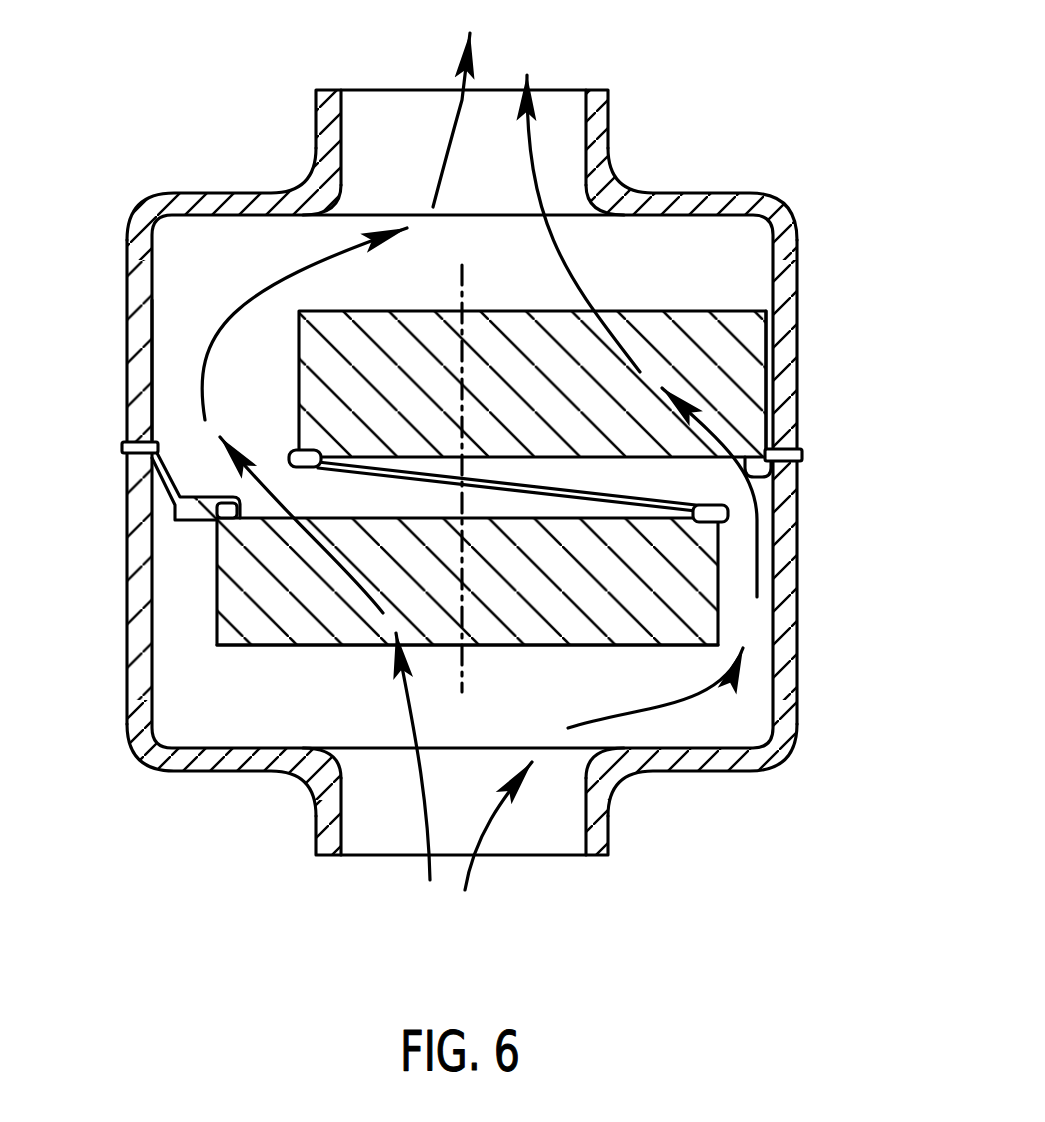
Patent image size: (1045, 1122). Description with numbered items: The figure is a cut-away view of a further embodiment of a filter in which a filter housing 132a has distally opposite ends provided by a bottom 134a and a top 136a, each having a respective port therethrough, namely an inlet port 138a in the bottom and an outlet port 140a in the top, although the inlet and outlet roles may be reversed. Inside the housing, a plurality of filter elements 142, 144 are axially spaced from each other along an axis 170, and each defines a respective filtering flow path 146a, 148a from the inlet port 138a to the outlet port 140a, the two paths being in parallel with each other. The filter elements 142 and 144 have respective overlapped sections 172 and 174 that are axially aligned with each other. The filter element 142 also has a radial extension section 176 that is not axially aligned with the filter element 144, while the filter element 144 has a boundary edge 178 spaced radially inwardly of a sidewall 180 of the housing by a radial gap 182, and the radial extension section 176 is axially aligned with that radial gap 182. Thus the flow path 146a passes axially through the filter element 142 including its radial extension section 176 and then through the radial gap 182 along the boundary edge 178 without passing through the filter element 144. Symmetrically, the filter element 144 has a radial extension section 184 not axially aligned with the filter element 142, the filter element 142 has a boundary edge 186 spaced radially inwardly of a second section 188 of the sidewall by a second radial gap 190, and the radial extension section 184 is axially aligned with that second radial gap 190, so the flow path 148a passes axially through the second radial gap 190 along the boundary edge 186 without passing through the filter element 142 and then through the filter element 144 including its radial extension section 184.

The filter housing 132a is at (482, 485).
The bottom 134a is at (722, 775).
The top 136a is at (713, 192).
The inlet port 138a is at (368, 857).
The outlet port 140a is at (373, 105).
The filter element 142 is at (293, 623).
The filter element 144 is at (716, 299).
The filtering flow path 146a is at (348, 258).
The filtering flow path 148a is at (568, 260).
The axis 170 is at (462, 357).
The overlapped section 172 is at (563, 618).
The overlapped section 174 is at (527, 332).
The radial extension section 176 is at (240, 562).
The boundary edge 178 is at (298, 384).
The sidewall 180 is at (128, 333).
The radial gap 182 is at (165, 392).
The radial extension section 184 is at (778, 388).
The boundary edge 186 is at (718, 587).
The second section of the sidewall 188 is at (797, 477).
The second radial gap 190 is at (763, 497).